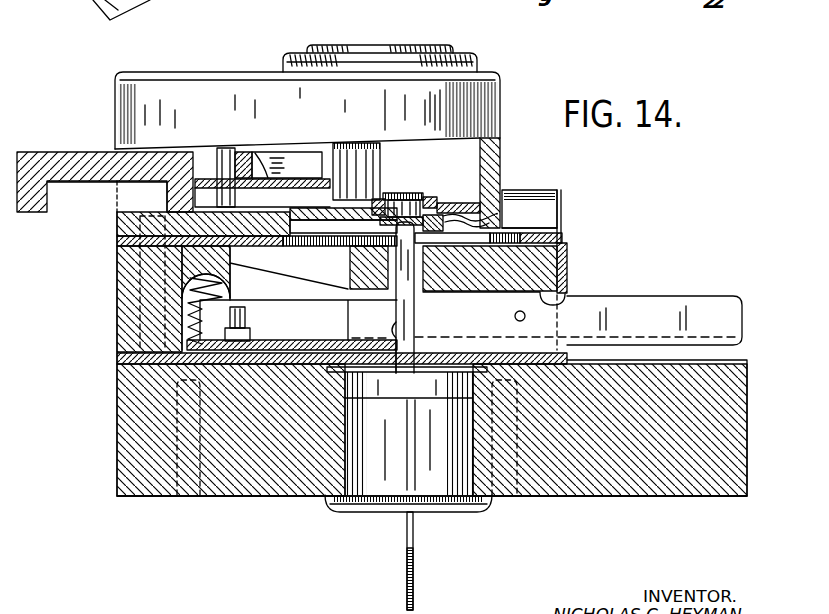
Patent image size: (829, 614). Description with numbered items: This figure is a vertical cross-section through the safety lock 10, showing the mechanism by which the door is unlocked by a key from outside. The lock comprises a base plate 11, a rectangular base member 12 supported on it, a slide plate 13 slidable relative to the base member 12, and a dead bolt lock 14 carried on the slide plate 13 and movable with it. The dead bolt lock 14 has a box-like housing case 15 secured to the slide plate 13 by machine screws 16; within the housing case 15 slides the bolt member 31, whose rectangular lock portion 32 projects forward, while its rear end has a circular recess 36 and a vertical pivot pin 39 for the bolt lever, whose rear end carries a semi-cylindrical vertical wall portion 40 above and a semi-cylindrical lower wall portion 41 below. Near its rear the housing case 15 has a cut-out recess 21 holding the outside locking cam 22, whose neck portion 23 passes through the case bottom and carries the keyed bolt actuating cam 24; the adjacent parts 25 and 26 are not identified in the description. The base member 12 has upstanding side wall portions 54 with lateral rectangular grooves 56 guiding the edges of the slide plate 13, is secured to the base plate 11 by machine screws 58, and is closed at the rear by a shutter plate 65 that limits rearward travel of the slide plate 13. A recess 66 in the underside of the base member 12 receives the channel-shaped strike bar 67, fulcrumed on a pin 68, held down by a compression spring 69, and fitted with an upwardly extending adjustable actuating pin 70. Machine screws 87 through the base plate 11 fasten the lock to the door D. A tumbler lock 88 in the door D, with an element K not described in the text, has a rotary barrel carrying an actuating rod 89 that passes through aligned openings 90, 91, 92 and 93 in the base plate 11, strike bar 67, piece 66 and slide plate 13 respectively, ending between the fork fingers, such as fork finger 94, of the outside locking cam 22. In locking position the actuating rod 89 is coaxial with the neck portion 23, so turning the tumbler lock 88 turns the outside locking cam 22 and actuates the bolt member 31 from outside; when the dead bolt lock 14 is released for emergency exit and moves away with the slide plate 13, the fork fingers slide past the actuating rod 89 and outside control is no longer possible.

The safety lock 10 is at (250, 55).
The base plate 11 is at (117, 363).
The base member 12 is at (117, 273).
The slide plate 13 is at (560, 242).
The dead bolt lock 14 is at (505, 101).
The housing case 15 is at (503, 157).
The machine screws 16 is at (117, 238).
The cut-out portion or recess 21 is at (508, 208).
The outside locking cam 22 is at (529, 209).
The neck portion 23 is at (425, 193).
The bolt actuating cam 24 is at (441, 200).
The nut 25 is at (432, 200).
The plate 26 is at (330, 198).
The bolt member 31 is at (90, 148).
The lock portion 32 is at (43, 152).
The circular recess 36 is at (270, 158).
The pivot pin 39 is at (228, 148).
The semi-cylindrical vertical wall portion 40 is at (381, 152).
The semi-cylindrical lower wall portion 41 is at (389, 193).
The side wall portions 54 is at (568, 197).
The lateral rectangular groove 56 is at (548, 229).
The machine screws 58 is at (117, 328).
The shutter plate 65 is at (567, 260).
The recess 66 is at (563, 297).
The strike bar 67 is at (628, 305).
The pin 68 is at (526, 318).
The compression spring 69 is at (192, 337).
The adjustable actuating pin 70 is at (248, 320).
The machine screws 87 is at (167, 492).
The tumbler lock 88 is at (457, 512).
The actuating rod 89 is at (416, 296).
The opening 90 is at (414, 342).
The opening 91 is at (392, 326).
The opening 92 is at (425, 270).
The opening 93 is at (559, 194).
The fork finger 94 is at (327, 248).
The door D is at (150, 497).
The rod K is at (414, 580).